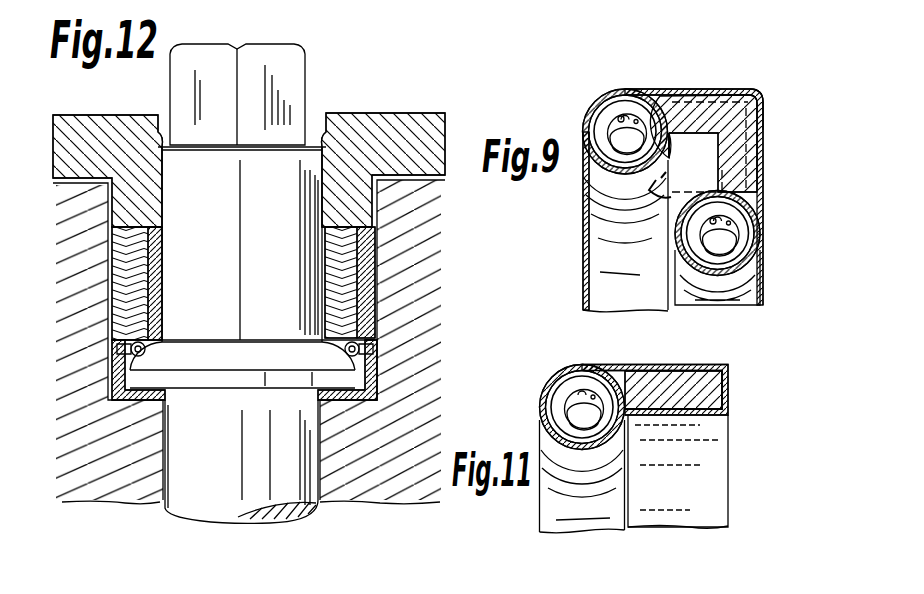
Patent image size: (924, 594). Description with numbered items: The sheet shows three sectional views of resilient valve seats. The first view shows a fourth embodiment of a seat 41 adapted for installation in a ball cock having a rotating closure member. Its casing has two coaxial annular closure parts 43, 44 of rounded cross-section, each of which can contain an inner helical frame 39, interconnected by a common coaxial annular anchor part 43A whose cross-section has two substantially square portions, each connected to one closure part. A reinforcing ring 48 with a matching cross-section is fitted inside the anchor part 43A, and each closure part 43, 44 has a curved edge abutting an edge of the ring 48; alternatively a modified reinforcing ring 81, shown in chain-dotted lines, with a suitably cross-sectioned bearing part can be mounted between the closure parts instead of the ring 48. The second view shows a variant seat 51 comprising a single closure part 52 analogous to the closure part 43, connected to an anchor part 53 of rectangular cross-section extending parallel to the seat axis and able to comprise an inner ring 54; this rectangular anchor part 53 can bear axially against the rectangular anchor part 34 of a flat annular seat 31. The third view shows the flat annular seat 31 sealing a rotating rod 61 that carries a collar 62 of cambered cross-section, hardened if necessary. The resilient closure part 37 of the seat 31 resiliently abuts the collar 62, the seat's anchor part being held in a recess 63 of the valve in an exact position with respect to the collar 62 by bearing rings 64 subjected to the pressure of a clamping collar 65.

In FIG. 12, the flat annular seat 31 is at (366, 332).
In FIG. 12, the anchor part 34 is at (365, 349).
In FIG. 12, the resilient closure part 37 is at (302, 345).
In FIG. 9, the inner helical frame 39 is at (625, 117).
In FIG. 9, the seat 41 is at (772, 151).
In FIG. 9, the annular closure part 43 is at (584, 109).
In FIG. 9, the anchor part 43A is at (767, 113).
In FIG. 9, the annular closure part 44 is at (752, 271).
In FIG. 9, the reinforcing ring 48 is at (700, 106).
In FIG. 11, the annular seat 51 is at (742, 456).
In FIG. 11, the closure part 52 is at (546, 381).
In FIG. 11, the anchor part 53 is at (662, 364).
In FIG. 11, the inner ring 54 is at (676, 399).
In FIG. 12, the rotating rod 61 is at (172, 510).
In FIG. 12, the collar 62 is at (172, 352).
In FIG. 12, the recess 63 is at (386, 392).
In FIG. 12, the bearing rings 64 is at (372, 271).
In FIG. 12, the clamping collar 65 is at (372, 128).
In FIG. 9, the modified reinforcing ring 81 is at (660, 199).